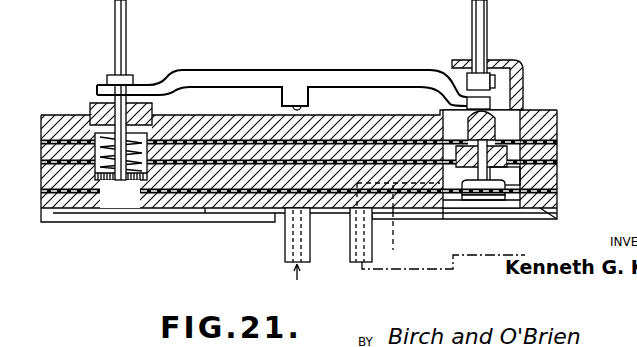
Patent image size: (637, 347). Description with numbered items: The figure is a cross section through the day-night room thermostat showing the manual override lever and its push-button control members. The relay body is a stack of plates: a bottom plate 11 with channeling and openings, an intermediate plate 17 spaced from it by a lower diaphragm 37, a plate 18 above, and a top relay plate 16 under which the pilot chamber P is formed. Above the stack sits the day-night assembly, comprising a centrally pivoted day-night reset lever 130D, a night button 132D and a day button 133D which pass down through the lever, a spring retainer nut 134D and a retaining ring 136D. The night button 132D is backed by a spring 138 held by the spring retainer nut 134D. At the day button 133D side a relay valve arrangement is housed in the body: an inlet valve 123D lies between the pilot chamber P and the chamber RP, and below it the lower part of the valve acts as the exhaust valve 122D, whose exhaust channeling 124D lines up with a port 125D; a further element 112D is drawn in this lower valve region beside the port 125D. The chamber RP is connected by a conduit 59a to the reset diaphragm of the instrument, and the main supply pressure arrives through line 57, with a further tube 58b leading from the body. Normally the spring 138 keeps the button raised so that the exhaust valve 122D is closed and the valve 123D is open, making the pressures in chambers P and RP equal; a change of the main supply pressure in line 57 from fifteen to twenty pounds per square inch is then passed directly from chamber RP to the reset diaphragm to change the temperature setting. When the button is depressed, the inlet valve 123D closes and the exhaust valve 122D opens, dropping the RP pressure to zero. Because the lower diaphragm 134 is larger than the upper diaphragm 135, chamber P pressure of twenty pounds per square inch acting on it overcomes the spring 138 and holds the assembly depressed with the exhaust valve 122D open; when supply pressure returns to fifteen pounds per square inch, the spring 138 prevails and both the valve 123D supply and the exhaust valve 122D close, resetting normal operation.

The top relay plate 16 is at (41, 126).
The plate 18 is at (41, 143).
The intermediate plate 17 is at (41, 176).
The bottom plate 11 is at (41, 205).
The spring retainer nut 134D is at (90, 108).
The spring 138 is at (110, 172).
The night button 132D is at (115, 22).
The retaining ring 136D is at (133, 81).
The day-night reset lever 130D is at (272, 45).
The upper diaphragm 135 is at (557, 136).
The day button 133D is at (487, 22).
The chamber RP is at (447, 150).
The lower diaphragm 134 is at (557, 166).
The valve 123D is at (462, 190).
The pilot chamber P is at (513, 172).
The port 125D is at (483, 196).
The seat 112D is at (503, 198).
The exhaust valve 122D is at (557, 186).
The lower diaphragm 37 is at (557, 190).
The main supply line 57 is at (285, 256).
The outlet tube 58b is at (350, 246).
The exhaust channeling 124D is at (398, 224).
The conduit 59a is at (468, 258).